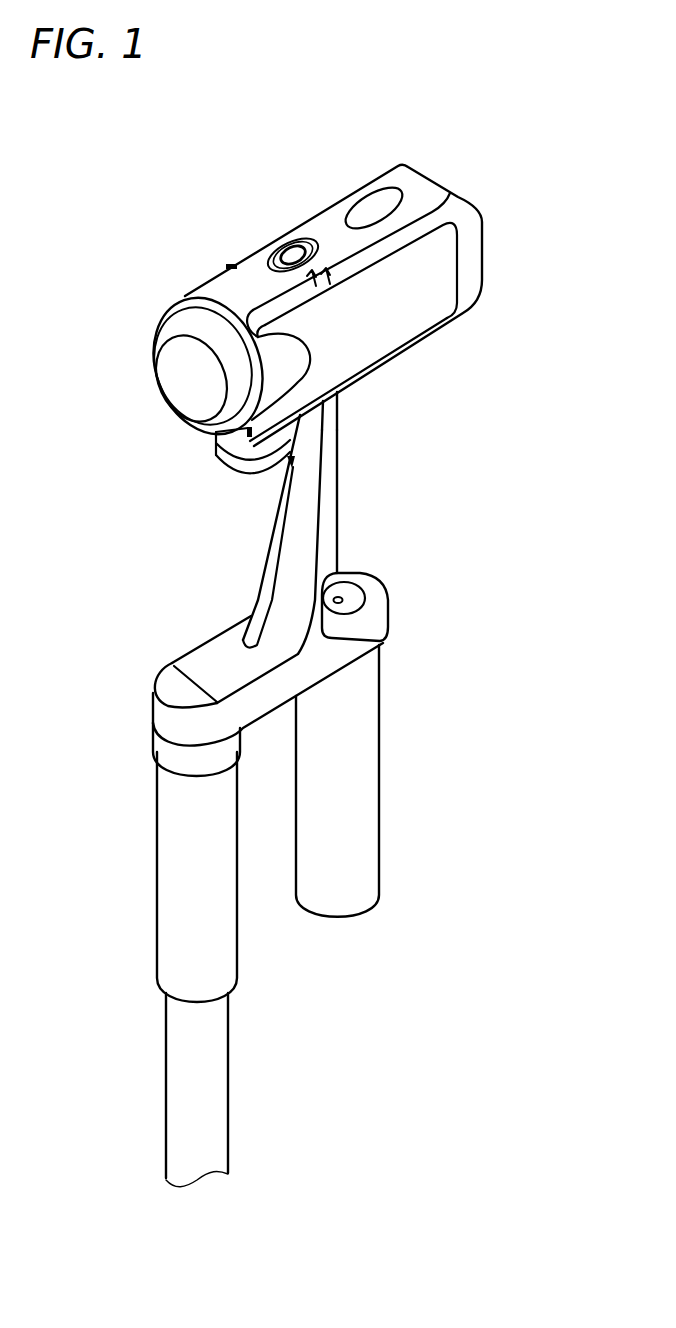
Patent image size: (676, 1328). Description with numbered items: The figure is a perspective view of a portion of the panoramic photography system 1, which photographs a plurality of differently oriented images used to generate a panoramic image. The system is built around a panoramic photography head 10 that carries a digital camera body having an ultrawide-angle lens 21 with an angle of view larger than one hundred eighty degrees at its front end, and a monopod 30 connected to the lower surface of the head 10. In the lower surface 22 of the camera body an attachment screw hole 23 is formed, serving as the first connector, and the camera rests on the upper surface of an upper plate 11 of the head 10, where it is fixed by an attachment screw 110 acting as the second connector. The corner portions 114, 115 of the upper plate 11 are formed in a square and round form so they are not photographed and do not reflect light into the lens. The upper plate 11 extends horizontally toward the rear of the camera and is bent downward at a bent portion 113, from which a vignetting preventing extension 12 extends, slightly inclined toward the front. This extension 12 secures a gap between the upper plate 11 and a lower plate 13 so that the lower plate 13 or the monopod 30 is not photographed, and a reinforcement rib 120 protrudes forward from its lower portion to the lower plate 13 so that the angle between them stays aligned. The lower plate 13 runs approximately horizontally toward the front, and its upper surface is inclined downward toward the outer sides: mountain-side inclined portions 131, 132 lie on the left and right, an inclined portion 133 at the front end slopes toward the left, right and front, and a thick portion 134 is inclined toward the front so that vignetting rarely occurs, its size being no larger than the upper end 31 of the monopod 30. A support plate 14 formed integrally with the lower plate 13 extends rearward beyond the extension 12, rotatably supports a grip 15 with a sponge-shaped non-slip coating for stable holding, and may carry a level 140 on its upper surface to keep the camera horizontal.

The panoramic photography system 1 is at (397, 128).
The panoramic photography head 10 is at (325, 547).
The upper plate 11 is at (206, 484).
The vignetting preventing extension 12 is at (333, 513).
The lower plate 13 is at (269, 648).
The support plate 14 is at (387, 586).
The grip 15 is at (382, 775).
The ultrawide-angle lens 21 is at (160, 388).
The lower surface 22 is at (378, 368).
The attachment screw hole 23 is at (358, 169).
The monopod 30 is at (156, 955).
The upper end 31 is at (158, 745).
The attachment screw 110 is at (217, 463).
The bent portion 113 is at (348, 405).
The corner portion 114 is at (250, 474).
The corner portion 115 is at (215, 448).
The reinforcement rib 120 is at (250, 632).
The mountain-side inclined portion 131 is at (160, 740).
The mountain-side inclined portion 132 is at (212, 657).
The inclined portion 133 is at (158, 680).
The thick portion 134 is at (162, 708).
The level 140 is at (348, 602).